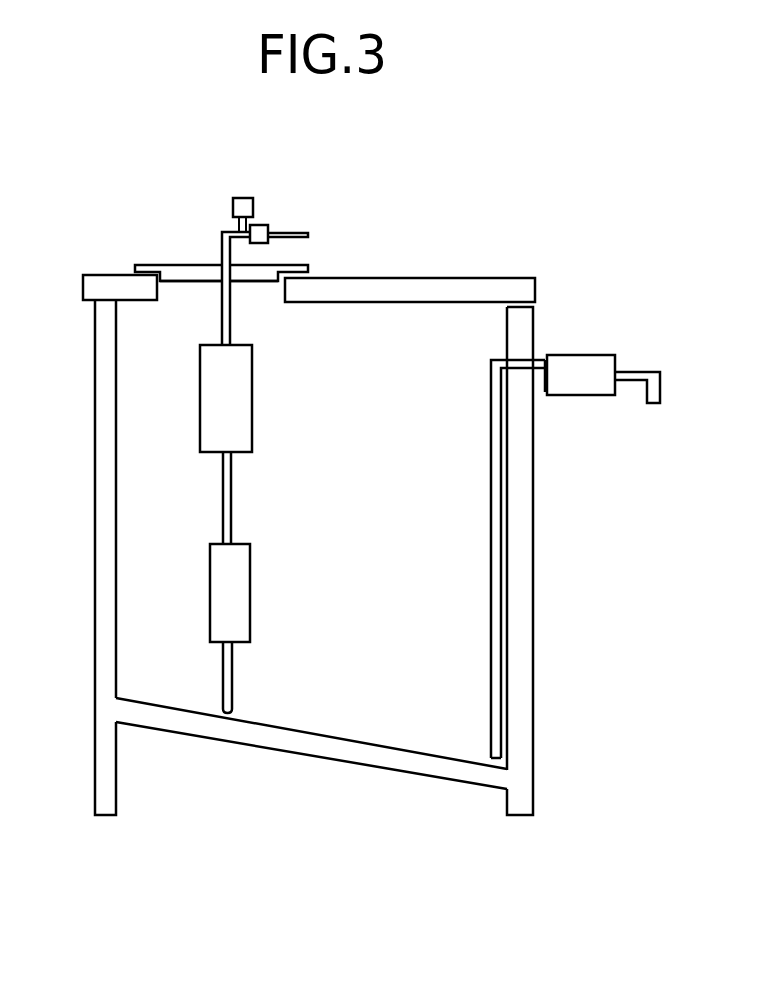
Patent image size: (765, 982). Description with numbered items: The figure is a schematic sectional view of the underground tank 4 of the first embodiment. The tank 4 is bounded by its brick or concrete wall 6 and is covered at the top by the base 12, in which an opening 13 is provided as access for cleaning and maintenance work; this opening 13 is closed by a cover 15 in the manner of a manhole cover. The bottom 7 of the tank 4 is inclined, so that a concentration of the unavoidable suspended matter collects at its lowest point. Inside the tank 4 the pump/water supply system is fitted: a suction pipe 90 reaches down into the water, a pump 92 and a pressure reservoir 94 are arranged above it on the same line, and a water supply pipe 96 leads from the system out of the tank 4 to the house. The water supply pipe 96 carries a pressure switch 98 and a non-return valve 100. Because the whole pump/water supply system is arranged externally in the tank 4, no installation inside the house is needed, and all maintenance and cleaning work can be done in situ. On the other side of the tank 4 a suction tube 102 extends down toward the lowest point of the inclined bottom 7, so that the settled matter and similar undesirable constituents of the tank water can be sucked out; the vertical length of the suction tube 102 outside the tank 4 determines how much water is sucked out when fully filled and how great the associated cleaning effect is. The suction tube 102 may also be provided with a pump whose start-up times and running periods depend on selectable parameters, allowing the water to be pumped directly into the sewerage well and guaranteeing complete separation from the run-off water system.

The tank 4 is at (433, 235).
The wall 6 is at (95, 568).
The bottom 7 is at (355, 740).
The base 12 is at (108, 274).
The opening 13 is at (172, 283).
The cover 15 is at (185, 264).
The suction pipe 90 is at (233, 683).
The pump 92 is at (250, 600).
The pressure reservoir 94 is at (253, 380).
The water supply pipe 96 is at (303, 232).
The pressure switch 98 is at (237, 197).
The non-return valve 100 is at (262, 226).
The suction tube 102 is at (539, 357).